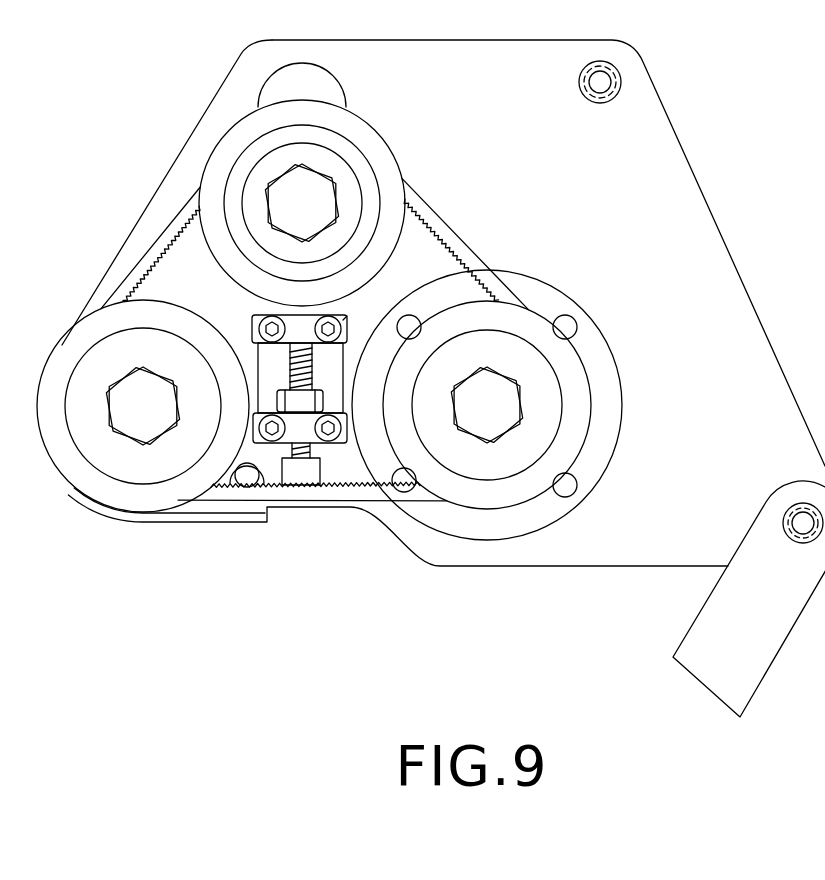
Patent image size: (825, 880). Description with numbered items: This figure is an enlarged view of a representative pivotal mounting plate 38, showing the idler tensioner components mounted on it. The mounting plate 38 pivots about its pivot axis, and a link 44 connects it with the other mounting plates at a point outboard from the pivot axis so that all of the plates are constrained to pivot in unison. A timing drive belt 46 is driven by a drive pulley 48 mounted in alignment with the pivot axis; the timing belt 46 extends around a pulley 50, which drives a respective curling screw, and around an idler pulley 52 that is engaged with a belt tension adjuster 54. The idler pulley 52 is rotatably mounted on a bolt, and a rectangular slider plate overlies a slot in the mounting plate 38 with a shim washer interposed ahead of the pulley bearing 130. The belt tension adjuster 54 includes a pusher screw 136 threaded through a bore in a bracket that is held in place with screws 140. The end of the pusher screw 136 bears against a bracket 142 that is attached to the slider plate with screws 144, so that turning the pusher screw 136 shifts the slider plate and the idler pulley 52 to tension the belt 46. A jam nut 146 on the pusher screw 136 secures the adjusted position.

The mounting plate 38 is at (651, 156).
The link 44 is at (708, 617).
The timing drive belt 46 is at (419, 197).
The drive pulley 48 is at (567, 290).
The pulley 50 is at (56, 349).
The idler pulley 52 is at (230, 130).
The belt tension adjuster 54 is at (243, 323).
The pulley bearing 130 is at (302, 437).
The pusher screw 136 is at (316, 473).
The screws 140 is at (268, 438).
The bracket 142 is at (347, 314).
The screws 144 is at (258, 313).
The jam nut 146 is at (330, 402).